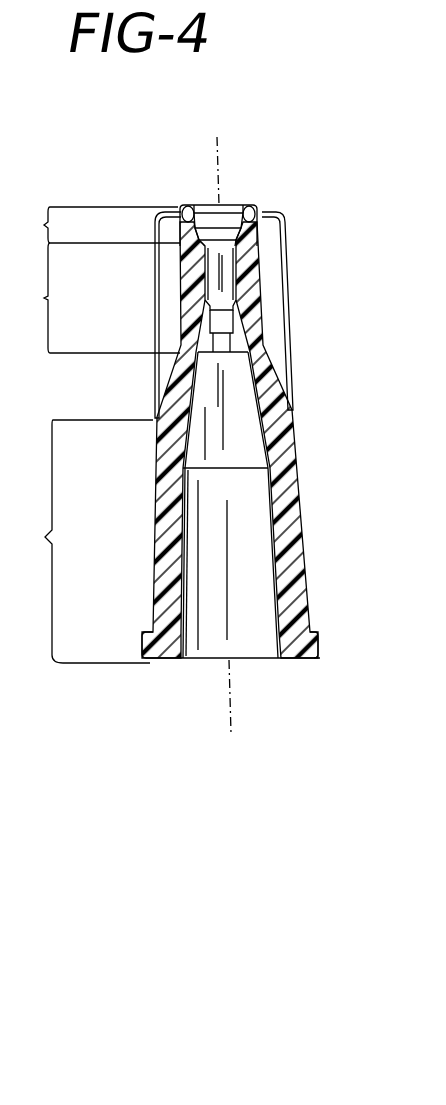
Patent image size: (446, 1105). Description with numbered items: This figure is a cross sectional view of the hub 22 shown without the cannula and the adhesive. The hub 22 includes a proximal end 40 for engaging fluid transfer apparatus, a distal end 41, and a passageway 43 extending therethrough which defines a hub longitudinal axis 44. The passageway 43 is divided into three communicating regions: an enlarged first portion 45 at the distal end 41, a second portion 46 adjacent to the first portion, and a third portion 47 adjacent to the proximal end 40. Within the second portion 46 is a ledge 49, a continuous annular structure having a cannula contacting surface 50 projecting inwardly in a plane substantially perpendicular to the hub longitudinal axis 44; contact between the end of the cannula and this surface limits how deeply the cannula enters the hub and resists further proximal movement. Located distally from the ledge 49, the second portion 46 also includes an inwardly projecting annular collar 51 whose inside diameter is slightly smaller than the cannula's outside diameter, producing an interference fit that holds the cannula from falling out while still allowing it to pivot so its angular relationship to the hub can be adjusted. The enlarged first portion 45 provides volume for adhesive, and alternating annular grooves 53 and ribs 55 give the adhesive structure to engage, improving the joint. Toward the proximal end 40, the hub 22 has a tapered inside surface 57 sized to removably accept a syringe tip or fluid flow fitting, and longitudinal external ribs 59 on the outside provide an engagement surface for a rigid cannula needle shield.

The hub 22 is at (297, 483).
The proximal end 40 is at (310, 627).
The distal end 41 is at (258, 210).
The passageway 43 is at (243, 642).
The hub longitudinal axis 44 is at (213, 152).
The first portion 45 is at (95, 225).
The second portion 46 is at (95, 298).
The third portion 47 is at (85, 541).
The ledge 49 is at (232, 333).
The cannula contacting surface 50 is at (207, 318).
The annular collar 51 is at (230, 303).
The annular grooves 53 is at (198, 210).
The ribs 55 is at (241, 208).
The tapered inside surface 57 is at (178, 531).
The longitudinal external ribs 59 is at (287, 252).